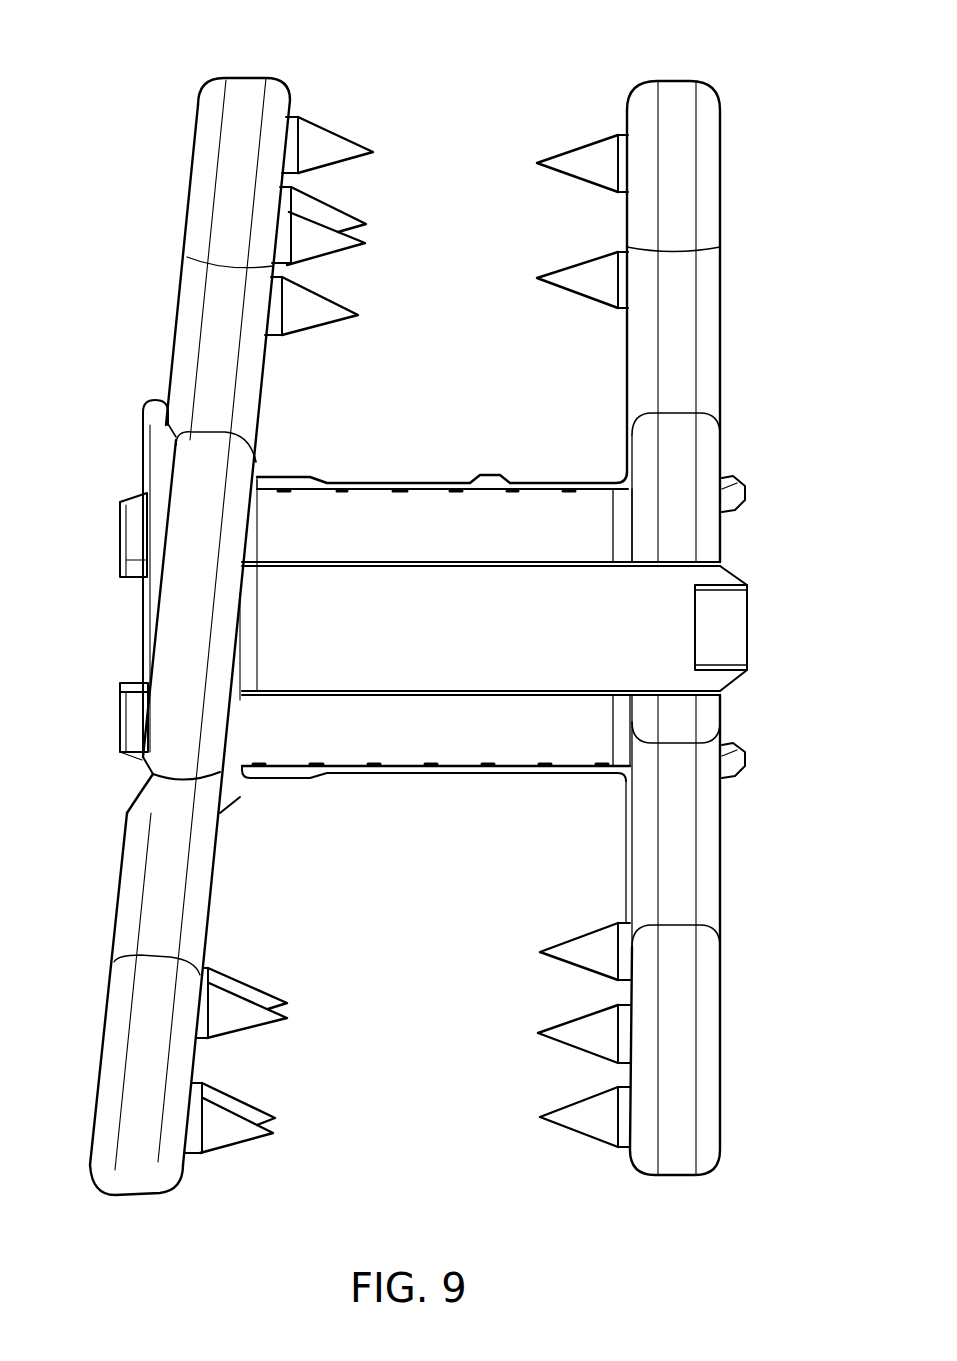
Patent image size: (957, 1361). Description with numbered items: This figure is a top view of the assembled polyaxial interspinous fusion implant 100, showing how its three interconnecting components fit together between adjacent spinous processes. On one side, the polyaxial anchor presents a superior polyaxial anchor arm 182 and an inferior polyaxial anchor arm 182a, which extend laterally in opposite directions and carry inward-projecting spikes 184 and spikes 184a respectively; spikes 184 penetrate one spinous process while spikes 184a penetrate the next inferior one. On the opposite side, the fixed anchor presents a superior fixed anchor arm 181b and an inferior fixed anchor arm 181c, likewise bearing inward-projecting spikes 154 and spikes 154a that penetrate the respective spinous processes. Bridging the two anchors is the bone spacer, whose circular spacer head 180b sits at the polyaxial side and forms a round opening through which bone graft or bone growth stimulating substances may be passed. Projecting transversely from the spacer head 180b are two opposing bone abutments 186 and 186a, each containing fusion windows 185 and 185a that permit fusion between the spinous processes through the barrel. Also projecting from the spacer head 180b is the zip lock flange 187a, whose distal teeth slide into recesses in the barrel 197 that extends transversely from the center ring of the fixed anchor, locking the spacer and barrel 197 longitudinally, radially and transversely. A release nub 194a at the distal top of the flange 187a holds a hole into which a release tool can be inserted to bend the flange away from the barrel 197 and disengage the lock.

The polyaxial interspinous fusion implant 100 is at (753, 37).
The superior polyaxial anchor arm 182 is at (250, 100).
The inferior polyaxial anchor arm 182a is at (137, 1178).
The spikes 184 is at (330, 142).
The spikes 184a is at (240, 1010).
The spikes 154 is at (580, 152).
The spikes 154a is at (580, 1118).
The superior fixed anchor arm 181b is at (668, 102).
The inferior fixed anchor arm 181c is at (672, 1087).
The spacer head 180b is at (145, 438).
The fusion windows 185 is at (444, 551).
The fusion windows 185a is at (372, 770).
The bone abutment 186 is at (735, 478).
The bone abutment 186a is at (745, 768).
The zip lock flange 187a is at (683, 580).
The release nub 194a is at (718, 630).
The barrel 197 is at (363, 500).